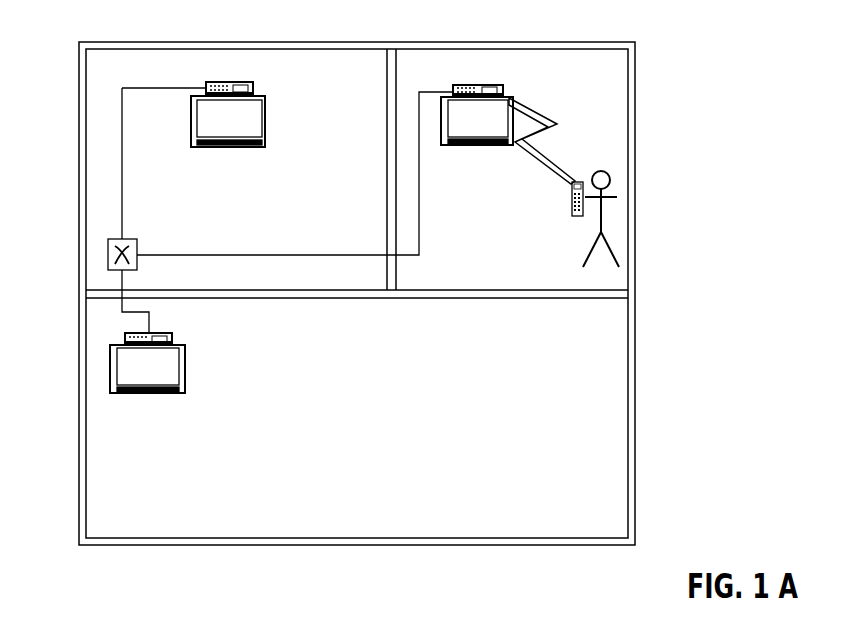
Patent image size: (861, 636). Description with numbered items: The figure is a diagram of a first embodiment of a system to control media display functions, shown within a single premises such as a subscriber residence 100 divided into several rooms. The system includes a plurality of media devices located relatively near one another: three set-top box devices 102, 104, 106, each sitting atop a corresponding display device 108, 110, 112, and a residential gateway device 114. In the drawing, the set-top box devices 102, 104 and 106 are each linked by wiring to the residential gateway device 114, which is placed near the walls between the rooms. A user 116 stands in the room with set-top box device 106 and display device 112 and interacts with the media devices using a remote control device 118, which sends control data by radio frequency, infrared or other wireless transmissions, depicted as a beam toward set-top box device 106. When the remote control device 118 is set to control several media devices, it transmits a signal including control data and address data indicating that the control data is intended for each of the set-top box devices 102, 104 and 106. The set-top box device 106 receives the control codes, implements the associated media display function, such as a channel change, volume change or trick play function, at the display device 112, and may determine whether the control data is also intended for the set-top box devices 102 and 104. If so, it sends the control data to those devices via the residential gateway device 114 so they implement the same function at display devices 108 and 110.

The subscriber residence 100 is at (120, 42).
The set-top box device 102 is at (230, 82).
The set-top box device 104 is at (175, 338).
The set-top box device 106 is at (477, 85).
The display device 108 is at (266, 118).
The display device 110 is at (189, 367).
The display device 112 is at (500, 148).
The residential gateway device 114 is at (108, 250).
The user 116 is at (608, 172).
The remote control device 118 is at (577, 217).